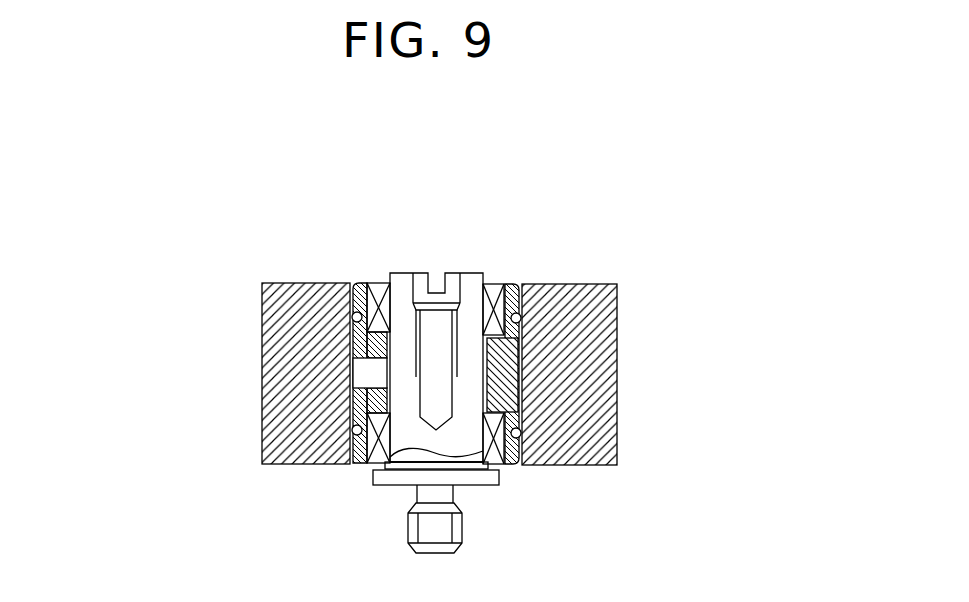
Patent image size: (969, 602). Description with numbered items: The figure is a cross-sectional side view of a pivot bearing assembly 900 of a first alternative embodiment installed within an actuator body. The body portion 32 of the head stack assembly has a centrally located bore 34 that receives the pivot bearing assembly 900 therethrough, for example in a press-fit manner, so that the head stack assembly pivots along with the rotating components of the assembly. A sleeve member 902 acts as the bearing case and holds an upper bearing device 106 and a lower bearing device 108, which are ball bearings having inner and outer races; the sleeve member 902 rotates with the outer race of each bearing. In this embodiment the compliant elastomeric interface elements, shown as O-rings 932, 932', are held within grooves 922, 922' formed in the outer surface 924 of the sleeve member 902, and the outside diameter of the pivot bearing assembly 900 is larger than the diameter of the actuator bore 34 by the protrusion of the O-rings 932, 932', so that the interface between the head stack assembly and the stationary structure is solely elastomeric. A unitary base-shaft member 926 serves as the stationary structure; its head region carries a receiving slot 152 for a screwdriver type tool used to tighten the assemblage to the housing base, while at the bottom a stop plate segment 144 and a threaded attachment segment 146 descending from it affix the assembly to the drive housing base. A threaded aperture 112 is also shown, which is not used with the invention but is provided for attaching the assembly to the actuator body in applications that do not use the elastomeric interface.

The pivot bearing assembly 900 is at (382, 168).
The body portion 32 is at (319, 328).
The bore 34 is at (251, 338).
The upper bearing device 106 is at (552, 327).
The lower bearing device 108 is at (375, 461).
The threaded aperture 112 is at (367, 378).
The stop plate segment 144 is at (478, 479).
The attachment segment 146 is at (447, 529).
The receiving slot 152 is at (516, 292).
The sleeve member 902 is at (510, 370).
The groove 922 is at (623, 276).
The groove 922' is at (638, 453).
The outer surface 924 is at (528, 333).
The unitary base-shaft member 926 is at (286, 253).
The O-ring 932 is at (205, 354).
The O-ring 932' is at (214, 481).